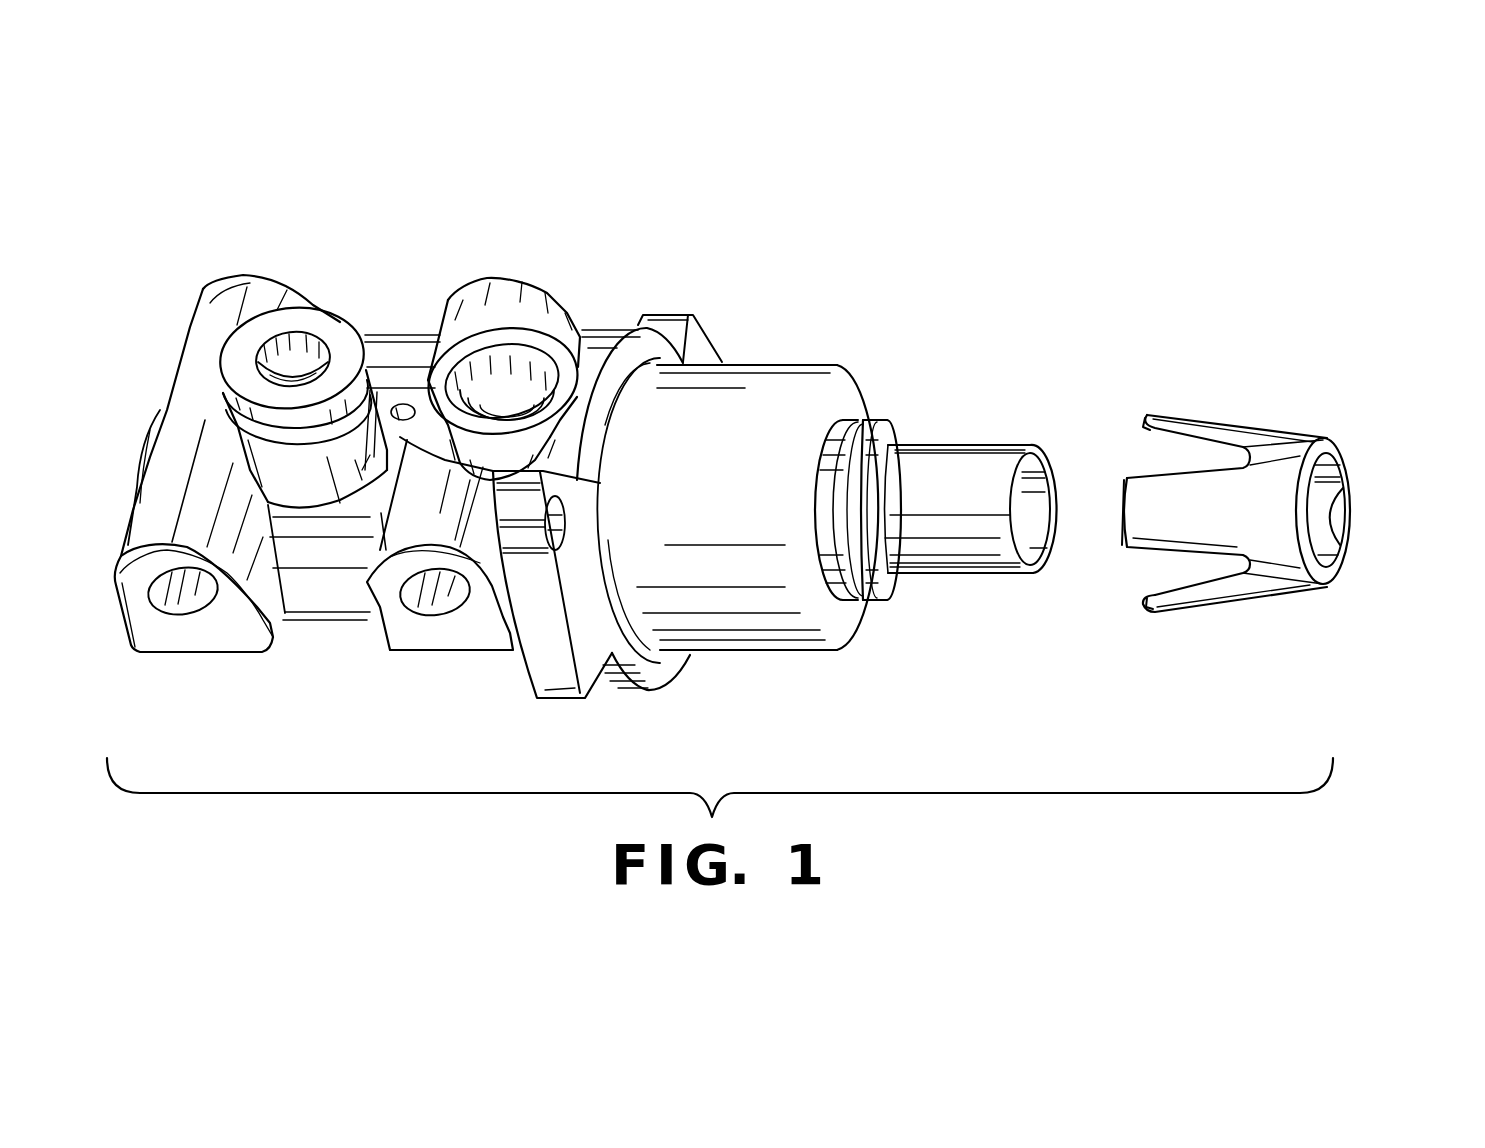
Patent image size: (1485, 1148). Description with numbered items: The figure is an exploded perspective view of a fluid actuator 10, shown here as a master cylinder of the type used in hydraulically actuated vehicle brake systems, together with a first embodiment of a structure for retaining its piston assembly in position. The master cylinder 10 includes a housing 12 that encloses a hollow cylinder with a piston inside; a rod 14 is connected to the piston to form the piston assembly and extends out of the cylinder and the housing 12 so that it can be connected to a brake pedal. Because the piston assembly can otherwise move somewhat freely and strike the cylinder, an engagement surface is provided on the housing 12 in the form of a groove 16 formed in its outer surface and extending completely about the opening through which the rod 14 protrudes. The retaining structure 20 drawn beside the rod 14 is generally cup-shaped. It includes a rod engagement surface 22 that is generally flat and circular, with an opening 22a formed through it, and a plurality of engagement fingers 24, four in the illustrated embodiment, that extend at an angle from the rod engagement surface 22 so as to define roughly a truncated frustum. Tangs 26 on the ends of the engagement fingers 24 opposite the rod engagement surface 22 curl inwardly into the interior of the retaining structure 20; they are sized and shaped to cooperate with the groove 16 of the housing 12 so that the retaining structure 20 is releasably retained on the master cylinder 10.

The fluid actuator 10 is at (534, 223).
The housing 12 is at (758, 383).
The rod 14 is at (986, 462).
The groove 16 is at (843, 560).
The retaining structure 20 is at (1281, 328).
The rod engagement surface 22 is at (1335, 459).
The opening 22a is at (1340, 540).
The engagement fingers 24 is at (1222, 429).
The tangs 26 is at (1142, 433).